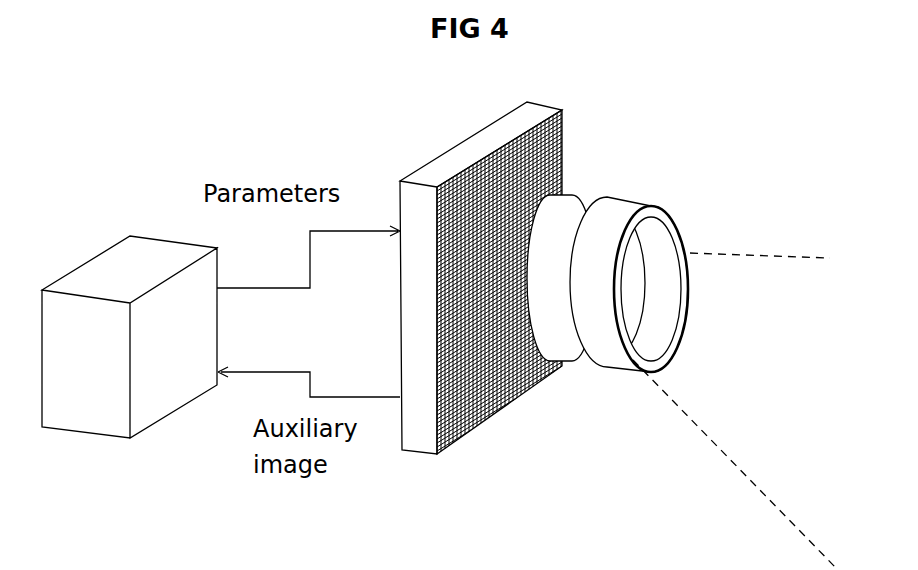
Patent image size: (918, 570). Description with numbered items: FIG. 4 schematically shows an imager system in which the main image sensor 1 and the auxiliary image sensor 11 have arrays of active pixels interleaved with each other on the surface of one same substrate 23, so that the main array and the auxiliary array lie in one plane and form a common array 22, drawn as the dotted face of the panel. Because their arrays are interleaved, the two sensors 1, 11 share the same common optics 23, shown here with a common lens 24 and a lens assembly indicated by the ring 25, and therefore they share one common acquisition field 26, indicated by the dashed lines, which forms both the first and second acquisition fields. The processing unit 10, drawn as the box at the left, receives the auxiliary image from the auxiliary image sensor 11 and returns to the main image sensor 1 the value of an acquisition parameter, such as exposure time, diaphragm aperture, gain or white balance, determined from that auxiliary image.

The main image sensor 1 is at (619, 303).
The auxiliary image sensor 11 is at (593, 77).
The data processing unit 10 is at (108, 275).
The common array 22 is at (513, 388).
The common optics 23 is at (428, 455).
The common lens 24 is at (573, 193).
The ring 25 is at (672, 205).
The common acquisition field 26 is at (766, 262).